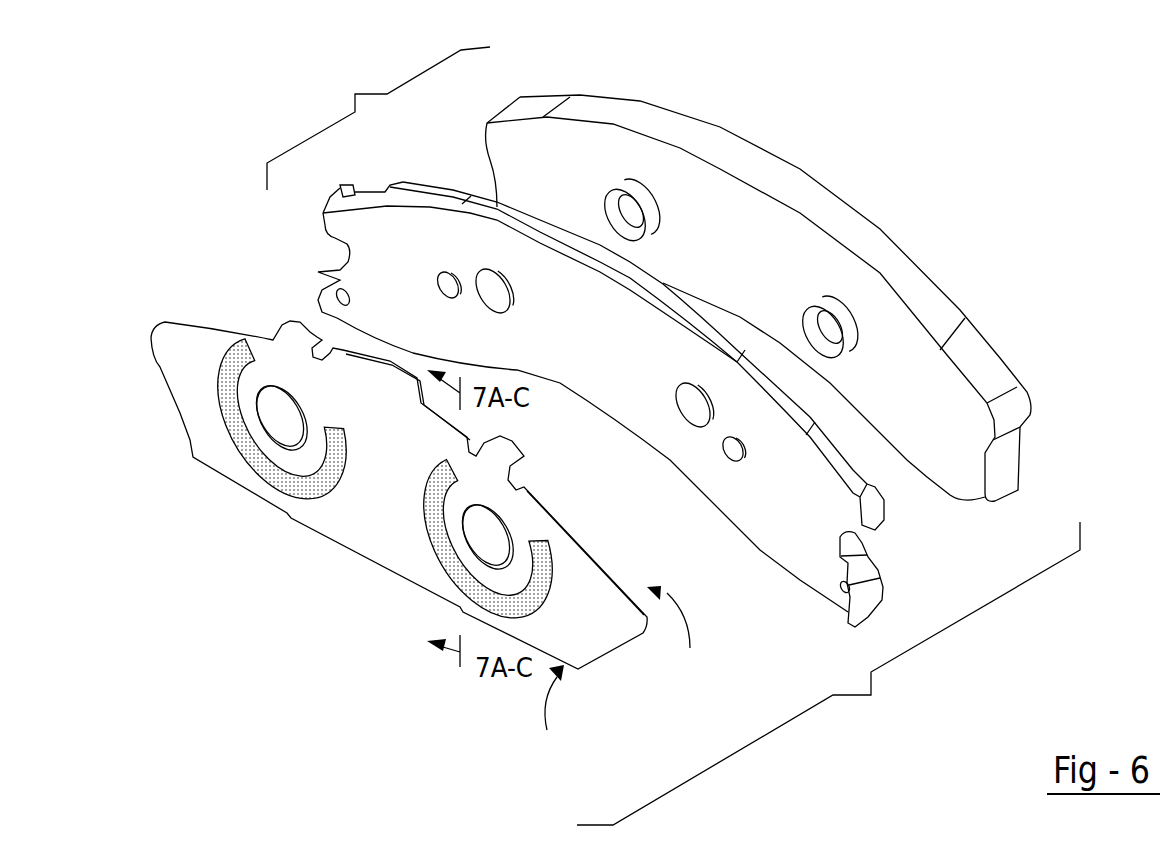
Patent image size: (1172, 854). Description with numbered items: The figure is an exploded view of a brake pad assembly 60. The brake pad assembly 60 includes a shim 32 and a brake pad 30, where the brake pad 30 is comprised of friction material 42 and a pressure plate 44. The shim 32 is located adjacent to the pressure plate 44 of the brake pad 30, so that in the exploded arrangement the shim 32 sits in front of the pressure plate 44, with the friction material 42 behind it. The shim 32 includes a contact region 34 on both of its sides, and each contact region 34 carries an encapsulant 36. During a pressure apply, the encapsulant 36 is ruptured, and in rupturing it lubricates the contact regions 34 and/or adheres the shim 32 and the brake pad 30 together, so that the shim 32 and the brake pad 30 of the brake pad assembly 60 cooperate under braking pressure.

The brake pad 30 is at (575, 337).
The shim 32 is at (340, 510).
The contact region 34 is at (622, 671).
The encapsulant 36 is at (247, 435).
The friction material 42 is at (718, 186).
The pressure plate 44 is at (543, 264).
The brake pad assembly 60 is at (828, 673).